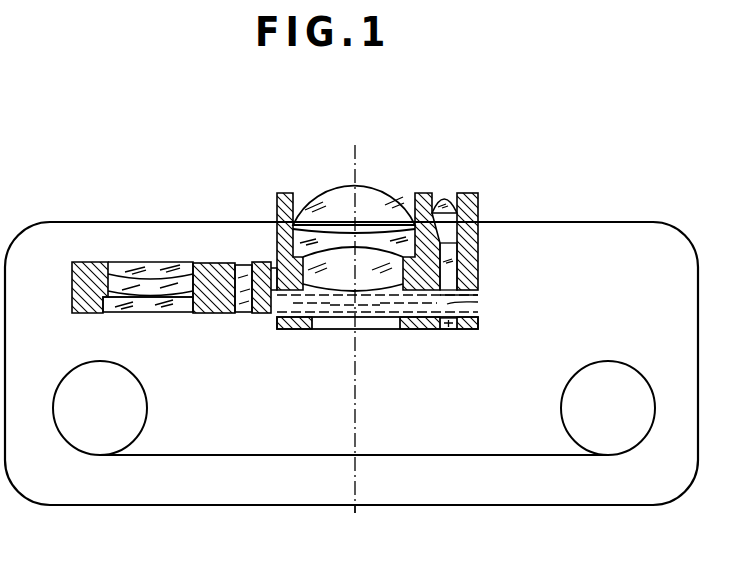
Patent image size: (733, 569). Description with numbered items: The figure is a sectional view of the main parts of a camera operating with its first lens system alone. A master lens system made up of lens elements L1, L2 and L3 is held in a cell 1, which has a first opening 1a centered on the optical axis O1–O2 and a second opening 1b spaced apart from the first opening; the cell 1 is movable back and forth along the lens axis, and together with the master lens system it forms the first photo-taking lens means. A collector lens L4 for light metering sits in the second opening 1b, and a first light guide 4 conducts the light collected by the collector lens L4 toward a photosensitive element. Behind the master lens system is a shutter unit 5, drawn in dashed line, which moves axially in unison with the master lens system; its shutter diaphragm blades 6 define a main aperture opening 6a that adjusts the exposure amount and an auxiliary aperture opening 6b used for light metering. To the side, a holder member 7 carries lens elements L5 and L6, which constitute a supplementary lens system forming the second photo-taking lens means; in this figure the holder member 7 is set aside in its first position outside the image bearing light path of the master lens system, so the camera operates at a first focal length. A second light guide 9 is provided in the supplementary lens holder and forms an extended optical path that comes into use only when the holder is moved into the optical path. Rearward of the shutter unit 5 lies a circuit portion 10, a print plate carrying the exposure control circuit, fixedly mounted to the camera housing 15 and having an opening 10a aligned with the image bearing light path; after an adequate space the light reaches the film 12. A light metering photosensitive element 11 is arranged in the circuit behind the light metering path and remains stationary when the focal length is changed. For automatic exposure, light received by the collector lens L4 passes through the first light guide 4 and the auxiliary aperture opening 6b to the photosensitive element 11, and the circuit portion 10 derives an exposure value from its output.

The cell 1 is at (283, 195).
The first opening 1a is at (405, 193).
The second opening 1b is at (437, 197).
The first light guide 4 is at (447, 277).
The shutter unit 5 is at (478, 312).
The shutter diaphragm blades 6 is at (297, 305).
The main aperture opening 6a is at (350, 300).
The auxiliary aperture opening 6b is at (450, 303).
The holder member 7 is at (95, 270).
The second light guide 9 is at (241, 268).
The circuit portion 10 is at (478, 328).
The opening 10a is at (385, 325).
The light metering photosensitive element 11 is at (450, 330).
The film 12 is at (395, 455).
The camera housing 15 is at (620, 507).
The master lens element L1 is at (306, 222).
The master lens element L2 is at (332, 243).
The master lens element L3 is at (376, 275).
The collector lens L4 is at (447, 203).
The supplementary lens element L5 is at (180, 310).
The supplementary lens element L6 is at (158, 270).
The optical axis O1 is at (359, 314).
The optical axis O2 is at (359, 527).